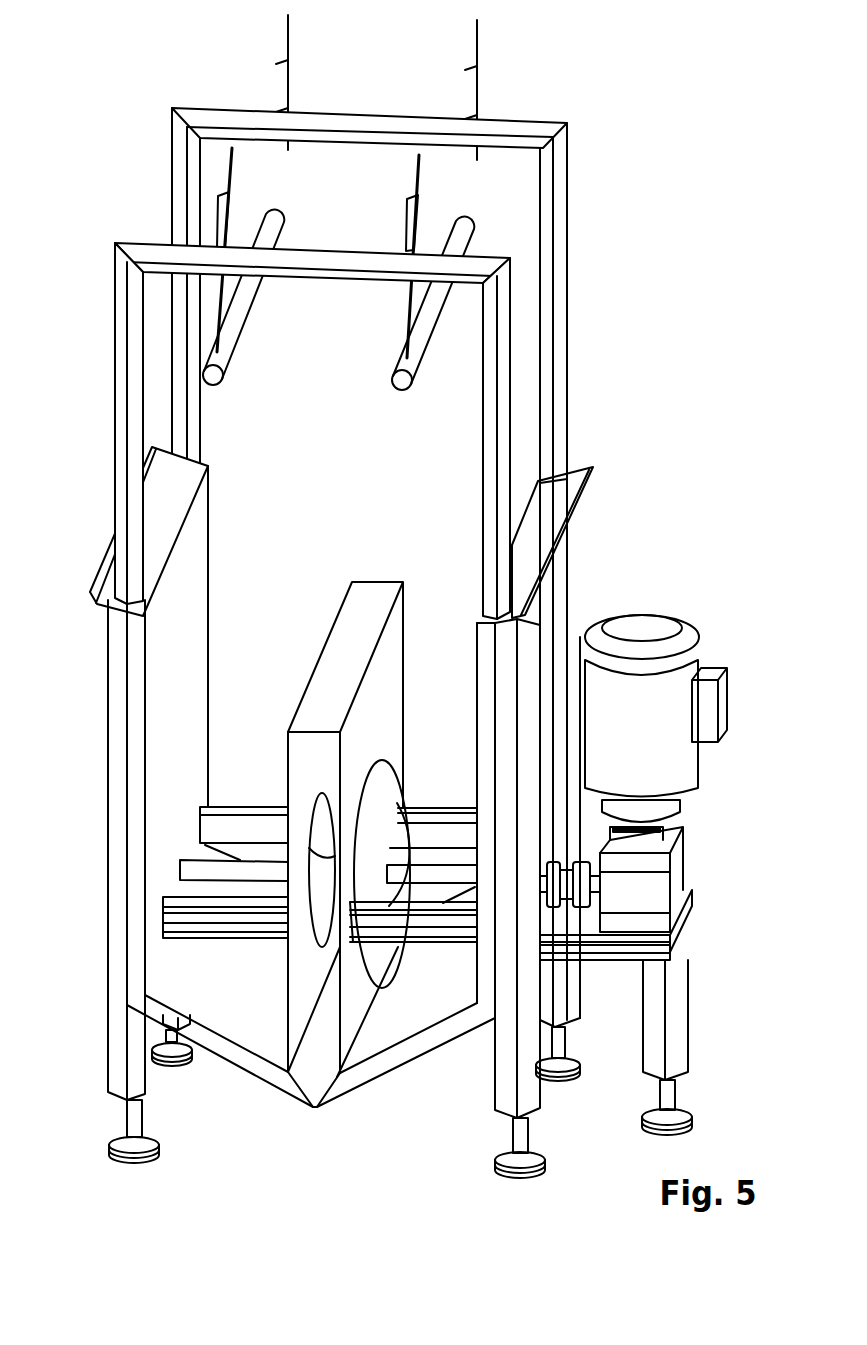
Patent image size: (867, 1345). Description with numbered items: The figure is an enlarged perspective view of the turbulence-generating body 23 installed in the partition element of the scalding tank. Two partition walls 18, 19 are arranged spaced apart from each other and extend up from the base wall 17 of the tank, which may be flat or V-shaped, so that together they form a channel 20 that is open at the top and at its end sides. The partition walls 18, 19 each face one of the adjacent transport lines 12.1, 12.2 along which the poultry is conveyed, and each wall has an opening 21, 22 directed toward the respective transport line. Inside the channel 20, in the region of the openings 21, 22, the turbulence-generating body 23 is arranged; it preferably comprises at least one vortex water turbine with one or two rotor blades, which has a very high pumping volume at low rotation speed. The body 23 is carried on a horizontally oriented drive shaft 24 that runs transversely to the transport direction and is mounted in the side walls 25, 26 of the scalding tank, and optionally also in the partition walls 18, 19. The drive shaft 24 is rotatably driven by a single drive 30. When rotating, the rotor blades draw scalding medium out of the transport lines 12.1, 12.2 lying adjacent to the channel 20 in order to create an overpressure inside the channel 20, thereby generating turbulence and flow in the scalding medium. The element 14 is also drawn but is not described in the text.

The transport line 12.1 is at (444, 594).
The transport line 12.2 is at (278, 594).
The holding rod 14 is at (442, 333).
The base wall 17 is at (235, 1028).
The partition wall 18 is at (377, 682).
The partition wall 19 is at (302, 772).
The channel 20 is at (320, 1068).
The opening 21 is at (398, 832).
The opening 22 is at (320, 948).
The turbulence-generating body 23 is at (405, 984).
The drive shaft 24 is at (180, 866).
The side wall 25 is at (550, 590).
The side wall 26 is at (158, 666).
The drive 30 is at (683, 640).